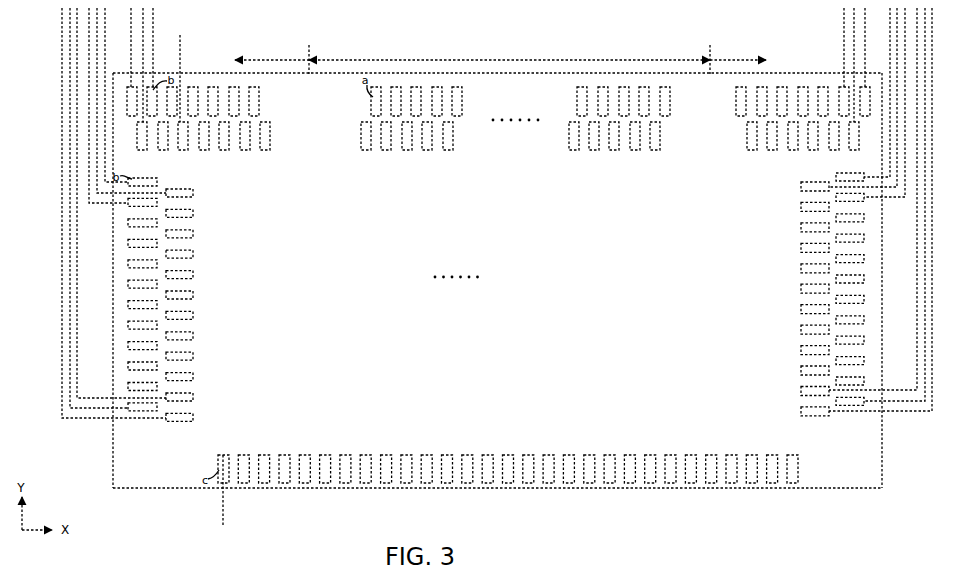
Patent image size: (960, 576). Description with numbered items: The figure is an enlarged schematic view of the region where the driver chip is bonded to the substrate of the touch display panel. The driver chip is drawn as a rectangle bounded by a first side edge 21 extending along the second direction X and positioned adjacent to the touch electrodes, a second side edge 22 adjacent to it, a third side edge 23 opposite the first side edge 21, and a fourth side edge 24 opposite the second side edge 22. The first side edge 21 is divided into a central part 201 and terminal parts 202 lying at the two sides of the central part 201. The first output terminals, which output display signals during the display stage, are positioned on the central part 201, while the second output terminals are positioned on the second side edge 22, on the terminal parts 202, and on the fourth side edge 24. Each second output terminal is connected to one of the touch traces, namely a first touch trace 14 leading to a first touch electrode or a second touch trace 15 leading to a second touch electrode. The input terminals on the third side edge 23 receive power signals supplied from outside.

The first touch traces 14 is at (131, 33).
The second touch traces 15 is at (153, 20).
The first side edge 21 is at (801, 70).
The second side edge 22 is at (110, 462).
The third side edge 23 is at (144, 491).
The fourth side edge 24 is at (885, 473).
The central part 201 is at (509, 52).
The terminal parts 202 is at (500, 52).